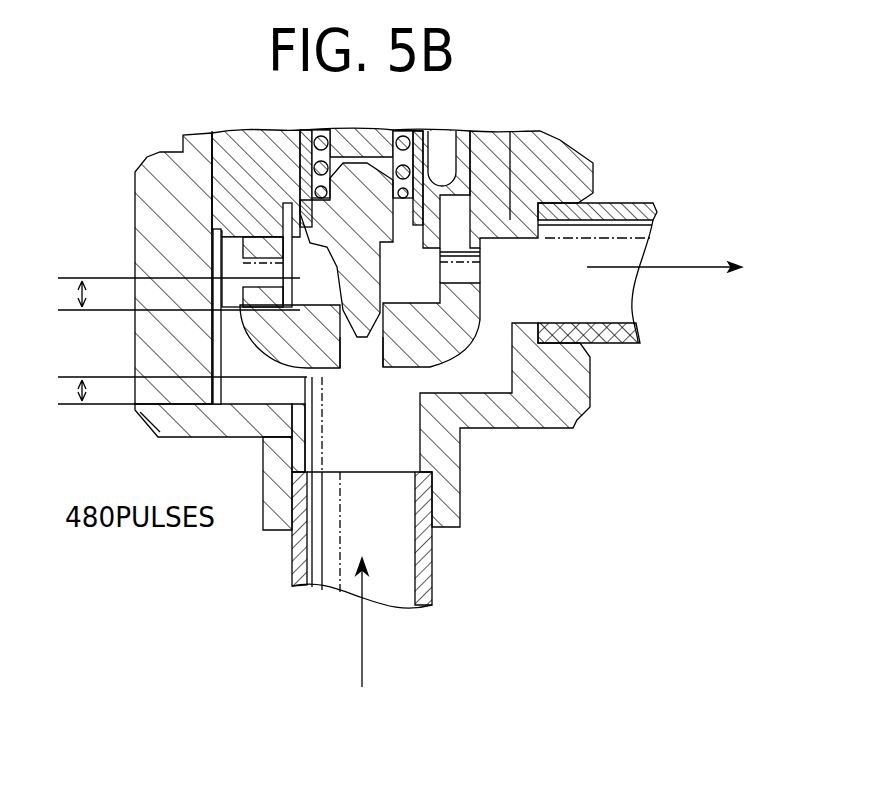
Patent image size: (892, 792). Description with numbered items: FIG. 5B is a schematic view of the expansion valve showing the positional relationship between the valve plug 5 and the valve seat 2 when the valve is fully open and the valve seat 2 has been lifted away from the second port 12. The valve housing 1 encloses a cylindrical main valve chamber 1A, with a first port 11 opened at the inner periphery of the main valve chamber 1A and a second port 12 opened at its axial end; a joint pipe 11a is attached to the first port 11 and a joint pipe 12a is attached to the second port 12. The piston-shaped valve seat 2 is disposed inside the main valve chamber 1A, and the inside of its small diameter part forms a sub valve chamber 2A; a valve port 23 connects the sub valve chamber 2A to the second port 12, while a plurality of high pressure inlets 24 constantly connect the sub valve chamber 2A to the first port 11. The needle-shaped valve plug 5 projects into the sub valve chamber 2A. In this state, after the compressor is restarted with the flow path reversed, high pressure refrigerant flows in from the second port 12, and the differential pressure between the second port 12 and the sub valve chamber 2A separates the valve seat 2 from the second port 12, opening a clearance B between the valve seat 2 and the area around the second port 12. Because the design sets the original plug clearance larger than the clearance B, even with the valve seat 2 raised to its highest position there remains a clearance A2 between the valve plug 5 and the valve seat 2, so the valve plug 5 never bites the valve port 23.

The valve housing 1 is at (135, 213).
The valve seat 2 is at (523, 175).
The sub valve chamber 2A is at (283, 231).
The main valve chamber 1A is at (245, 305).
The clearance A2 is at (165, 295).
The clearance B is at (176, 391).
The valve plug 5 is at (398, 258).
The valve port 23 is at (358, 355).
The high pressure inlets 24 is at (470, 267).
The second port 12 is at (395, 445).
The joint pipe 12a is at (433, 557).
The first port 11 is at (548, 296).
The joint pipe 11a is at (628, 203).